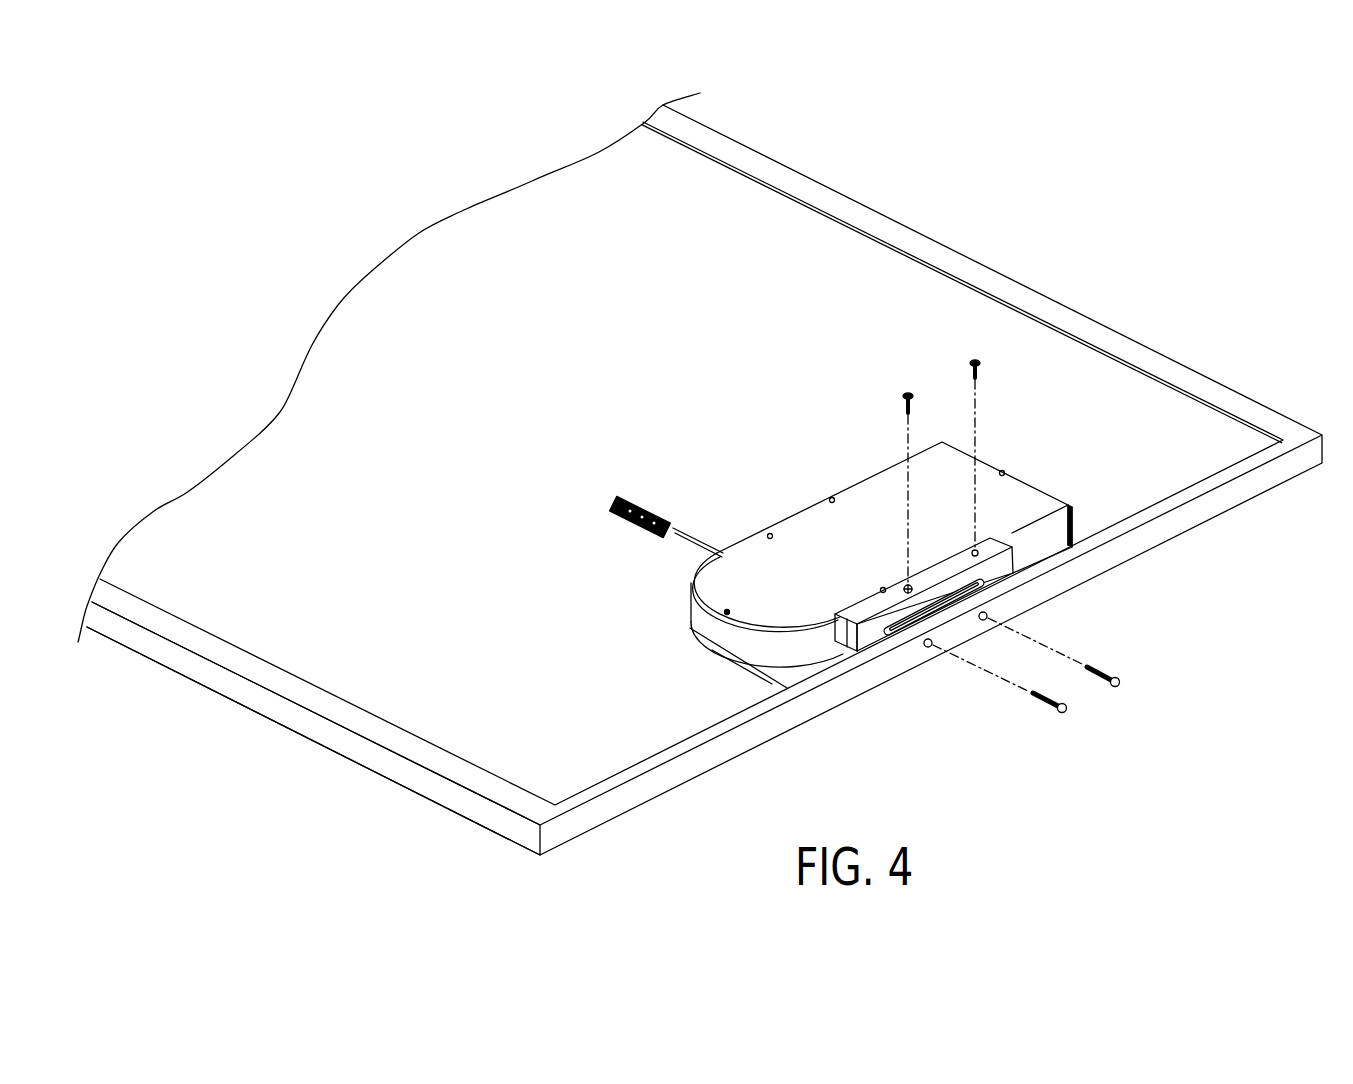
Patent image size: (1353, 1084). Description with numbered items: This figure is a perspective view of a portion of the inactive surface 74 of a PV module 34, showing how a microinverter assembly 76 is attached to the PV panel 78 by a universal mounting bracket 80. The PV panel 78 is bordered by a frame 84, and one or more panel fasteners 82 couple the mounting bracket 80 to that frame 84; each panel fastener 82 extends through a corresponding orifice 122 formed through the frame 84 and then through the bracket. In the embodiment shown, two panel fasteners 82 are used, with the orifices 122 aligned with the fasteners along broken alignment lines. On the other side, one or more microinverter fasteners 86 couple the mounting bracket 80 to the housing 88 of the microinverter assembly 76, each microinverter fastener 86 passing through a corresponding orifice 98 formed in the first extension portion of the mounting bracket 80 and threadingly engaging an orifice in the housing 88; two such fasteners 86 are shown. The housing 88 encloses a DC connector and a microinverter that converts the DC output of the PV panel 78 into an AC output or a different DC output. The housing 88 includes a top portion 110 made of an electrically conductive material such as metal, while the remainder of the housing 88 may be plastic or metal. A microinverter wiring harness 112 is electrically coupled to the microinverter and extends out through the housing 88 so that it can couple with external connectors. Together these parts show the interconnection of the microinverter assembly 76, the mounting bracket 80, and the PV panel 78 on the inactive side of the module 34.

The PV module 34 is at (1192, 255).
The inactive surface 74 is at (797, 260).
The microinverter assembly 76 is at (797, 497).
The PV panel 78 is at (310, 740).
The universal mounting bracket 80 is at (872, 635).
The panel fasteners 82 is at (1066, 710).
The frame 84 is at (1070, 573).
The microinverter fasteners 86 is at (973, 360).
The housing 88 is at (1025, 502).
The orifice 98 is at (908, 587).
The top portion 110 is at (720, 582).
The microinverter wiring harness 112 is at (702, 537).
The orifice 122 is at (928, 650).